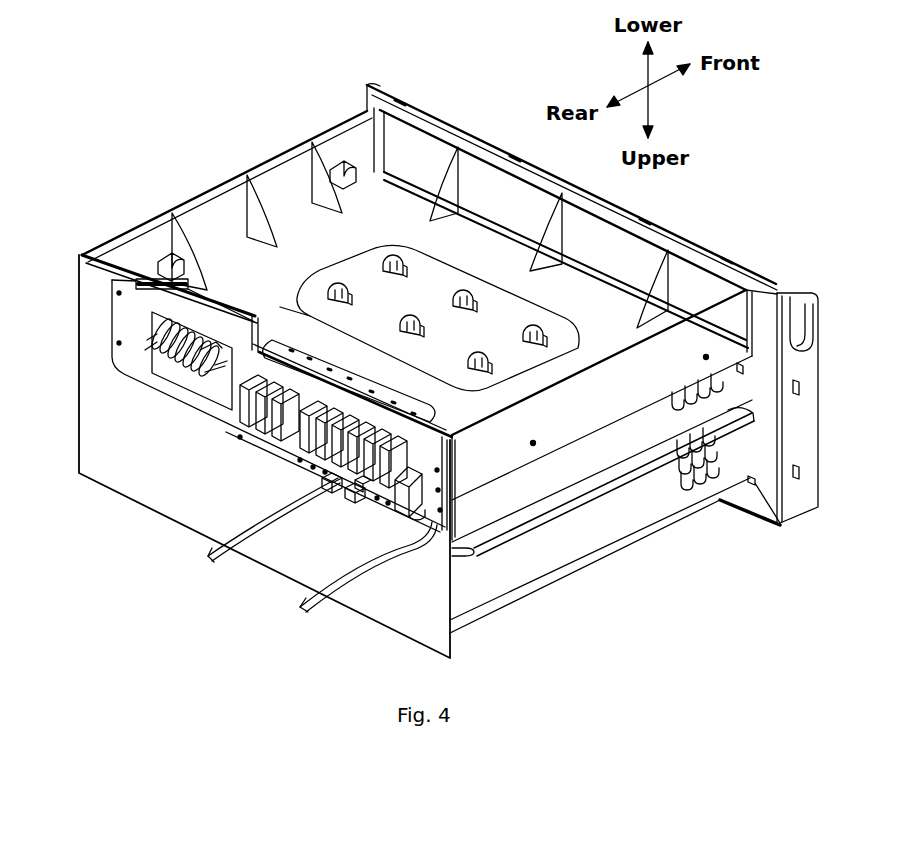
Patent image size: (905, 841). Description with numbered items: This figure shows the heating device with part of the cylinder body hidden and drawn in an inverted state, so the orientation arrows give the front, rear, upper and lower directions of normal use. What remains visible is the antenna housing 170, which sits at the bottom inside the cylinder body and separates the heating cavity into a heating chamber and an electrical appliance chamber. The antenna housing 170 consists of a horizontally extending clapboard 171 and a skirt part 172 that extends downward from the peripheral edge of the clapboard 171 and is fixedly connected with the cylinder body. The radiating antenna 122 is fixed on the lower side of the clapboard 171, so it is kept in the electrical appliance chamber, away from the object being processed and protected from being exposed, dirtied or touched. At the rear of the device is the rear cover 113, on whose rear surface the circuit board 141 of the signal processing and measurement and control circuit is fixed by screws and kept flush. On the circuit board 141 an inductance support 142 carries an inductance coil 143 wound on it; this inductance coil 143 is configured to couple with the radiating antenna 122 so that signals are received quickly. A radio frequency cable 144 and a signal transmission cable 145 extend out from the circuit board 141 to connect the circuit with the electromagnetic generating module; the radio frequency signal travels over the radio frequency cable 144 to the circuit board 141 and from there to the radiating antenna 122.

The rear cover 113 is at (113, 474).
The radiating antenna 122 is at (420, 265).
The circuit board 141 is at (118, 325).
The inductance support 142 is at (222, 383).
The inductance coil 143 is at (178, 382).
The radio frequency cable 144 is at (249, 548).
The signal transmission cable 145 is at (350, 588).
The antenna housing 170 is at (140, 222).
The clapboard 171 is at (302, 215).
The skirt part 172 is at (212, 215).